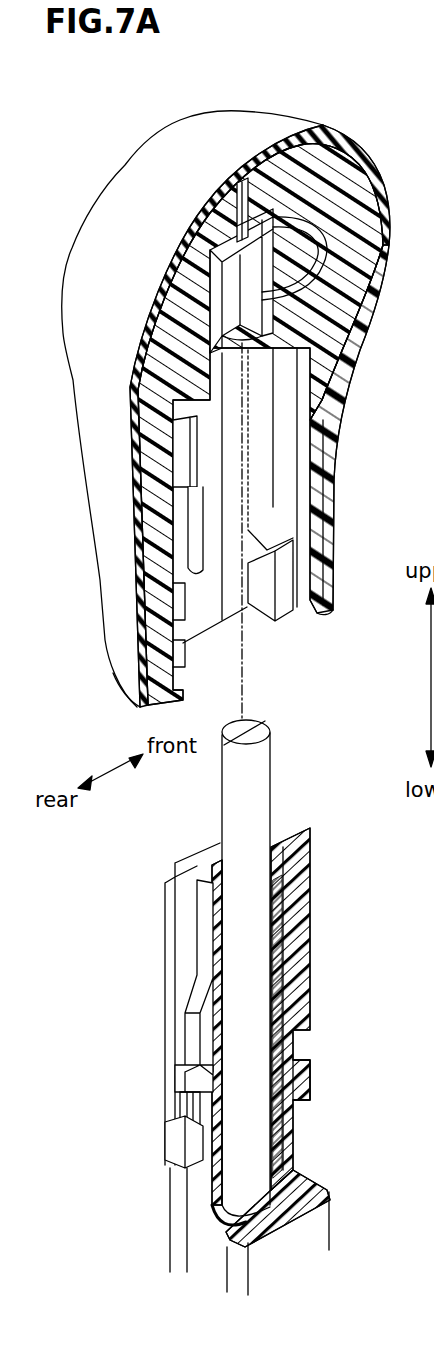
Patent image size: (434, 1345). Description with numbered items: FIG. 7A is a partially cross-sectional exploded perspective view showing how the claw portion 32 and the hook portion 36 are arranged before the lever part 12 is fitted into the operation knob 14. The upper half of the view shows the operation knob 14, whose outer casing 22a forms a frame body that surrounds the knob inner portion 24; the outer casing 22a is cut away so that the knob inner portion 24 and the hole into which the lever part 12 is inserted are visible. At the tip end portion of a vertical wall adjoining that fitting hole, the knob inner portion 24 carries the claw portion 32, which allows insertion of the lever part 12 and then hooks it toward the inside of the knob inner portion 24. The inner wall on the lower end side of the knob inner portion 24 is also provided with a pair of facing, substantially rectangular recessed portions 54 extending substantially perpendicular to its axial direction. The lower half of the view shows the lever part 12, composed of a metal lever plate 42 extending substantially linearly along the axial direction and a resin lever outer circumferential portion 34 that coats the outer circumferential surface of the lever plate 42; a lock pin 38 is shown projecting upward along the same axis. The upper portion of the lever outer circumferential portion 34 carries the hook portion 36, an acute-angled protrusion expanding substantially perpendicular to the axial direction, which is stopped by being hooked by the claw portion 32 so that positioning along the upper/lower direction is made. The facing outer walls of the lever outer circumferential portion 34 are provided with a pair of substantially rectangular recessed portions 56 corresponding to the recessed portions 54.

The lever part 12 is at (167, 1095).
The operation knob 14 is at (95, 653).
The outer casing 22a is at (193, 158).
The knob inner portion 24 is at (343, 268).
The claw portion 32 is at (187, 563).
The lever outer circumferential portion 34 is at (331, 1245).
The hook portion 36 is at (183, 1030).
The lock pin 38 is at (258, 800).
The lever plate 42 is at (284, 990).
The recessed portions 54 is at (184, 645).
The recessed portions 56 is at (291, 1048).